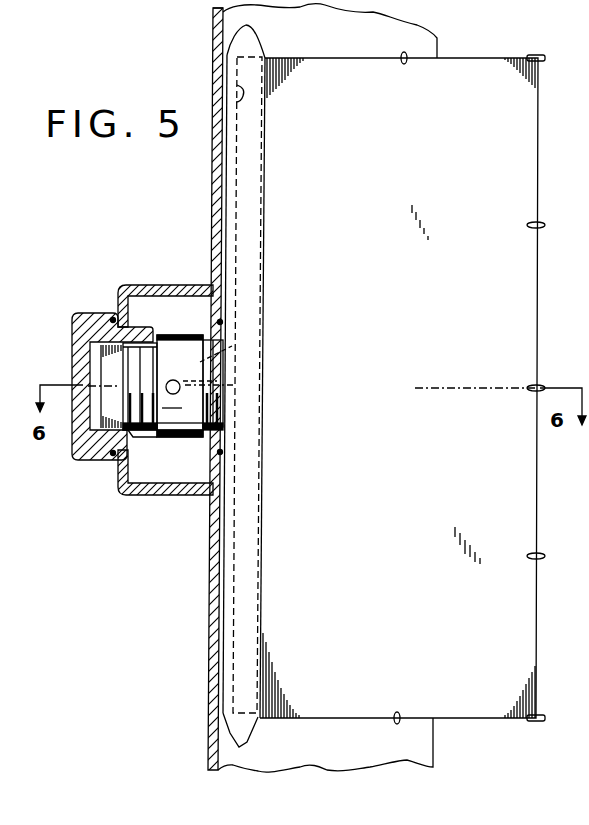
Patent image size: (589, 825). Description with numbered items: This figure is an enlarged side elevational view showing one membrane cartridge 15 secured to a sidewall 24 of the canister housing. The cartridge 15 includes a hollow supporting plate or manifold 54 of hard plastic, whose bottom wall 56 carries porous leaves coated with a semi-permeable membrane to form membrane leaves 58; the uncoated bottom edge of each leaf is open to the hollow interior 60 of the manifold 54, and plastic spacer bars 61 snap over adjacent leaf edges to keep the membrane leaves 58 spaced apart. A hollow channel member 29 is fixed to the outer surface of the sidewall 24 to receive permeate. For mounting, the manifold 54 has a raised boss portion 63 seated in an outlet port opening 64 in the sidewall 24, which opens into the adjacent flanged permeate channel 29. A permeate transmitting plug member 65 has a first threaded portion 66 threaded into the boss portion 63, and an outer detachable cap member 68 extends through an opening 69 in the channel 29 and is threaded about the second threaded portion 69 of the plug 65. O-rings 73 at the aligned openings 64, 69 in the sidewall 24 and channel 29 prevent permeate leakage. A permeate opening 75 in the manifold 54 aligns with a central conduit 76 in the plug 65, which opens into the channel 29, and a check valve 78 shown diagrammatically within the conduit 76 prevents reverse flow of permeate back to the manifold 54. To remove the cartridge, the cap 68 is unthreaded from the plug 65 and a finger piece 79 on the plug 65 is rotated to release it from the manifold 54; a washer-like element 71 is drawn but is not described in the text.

The membrane cartridge 15 is at (546, 80).
The sidewall 24 is at (215, 592).
The hollow channel member 29 is at (174, 494).
The manifold 54 is at (230, 62).
The bottom wall 56 is at (267, 118).
The membrane leaf 58 is at (546, 116).
The hollow interior 60 is at (233, 83).
The spacer bar 61 is at (530, 396).
The raised boss portion 63 is at (226, 342).
The outlet port opening 64 is at (211, 330).
The permeate transmitting plug member 65 is at (177, 433).
The first threaded portion 66 is at (205, 411).
The outer detachable cap member 68 is at (93, 312).
The opening in permeate channel / second threaded portion 69 is at (131, 330).
The washer 71 is at (135, 432).
The O-ring 73 is at (113, 453).
The permeate opening 75 is at (233, 387).
The central conduit 76 is at (233, 365).
The check valve 78 is at (193, 380).
The finger piece 79 is at (110, 370).